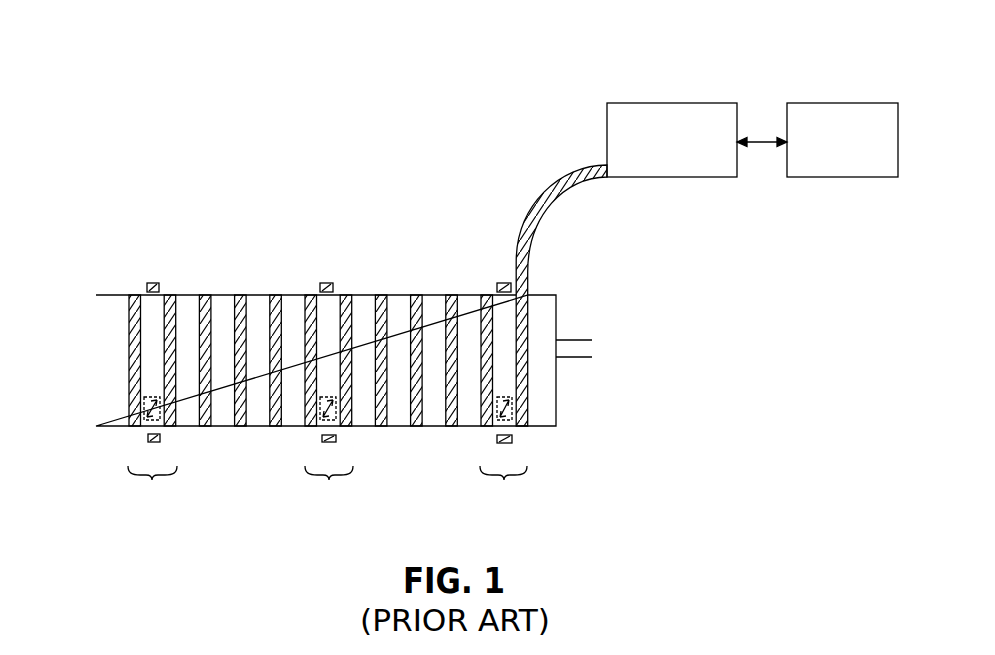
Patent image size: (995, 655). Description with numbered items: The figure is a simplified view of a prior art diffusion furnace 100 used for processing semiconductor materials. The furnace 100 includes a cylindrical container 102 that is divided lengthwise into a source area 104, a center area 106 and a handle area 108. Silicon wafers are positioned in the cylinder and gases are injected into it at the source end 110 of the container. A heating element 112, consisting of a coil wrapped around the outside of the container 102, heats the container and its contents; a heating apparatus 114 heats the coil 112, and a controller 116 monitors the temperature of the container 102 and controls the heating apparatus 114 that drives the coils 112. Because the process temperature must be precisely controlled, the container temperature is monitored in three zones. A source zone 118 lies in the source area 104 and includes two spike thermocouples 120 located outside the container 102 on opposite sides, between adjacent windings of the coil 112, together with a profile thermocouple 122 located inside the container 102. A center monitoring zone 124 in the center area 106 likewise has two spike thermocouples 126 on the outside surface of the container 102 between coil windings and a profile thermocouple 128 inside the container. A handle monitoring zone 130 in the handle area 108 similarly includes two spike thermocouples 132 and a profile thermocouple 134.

The furnace 100 is at (486, 76).
The cylindrical container 102 is at (96, 348).
The source area 104 is at (546, 295).
The center area 106 is at (361, 295).
The handle area 108 is at (140, 295).
The source end 110 is at (578, 340).
The heating element 112 is at (451, 295).
The heating apparatus 114 is at (675, 103).
The controller 116 is at (835, 103).
The source zone 118 is at (503, 487).
The spike thermocouples 120 is at (501, 283).
The profile thermocouple 122 is at (510, 396).
The center monitoring zone 124 is at (329, 487).
The spike thermocouples 126 is at (324, 283).
The profile thermocouple 128 is at (336, 405).
The handle monitoring zone 130 is at (152, 487).
The spike thermocouples 132 is at (153, 283).
The profile thermocouple 134 is at (146, 404).